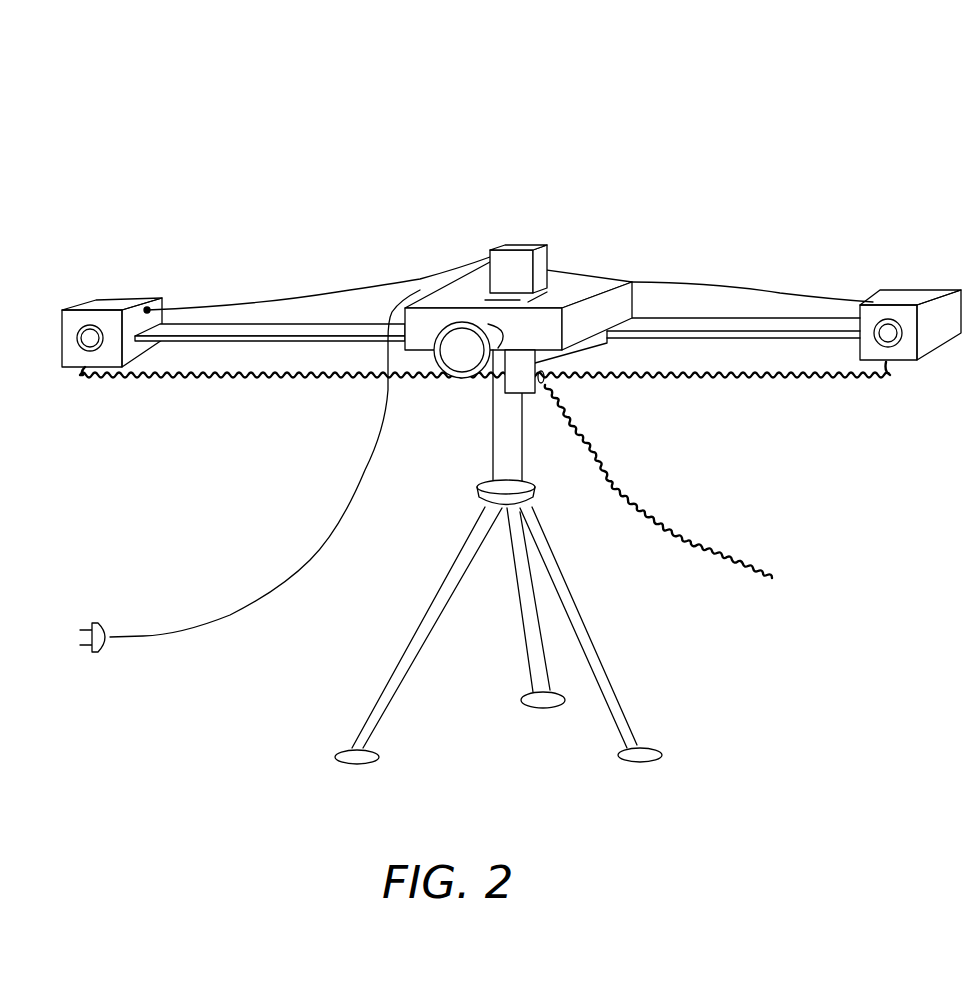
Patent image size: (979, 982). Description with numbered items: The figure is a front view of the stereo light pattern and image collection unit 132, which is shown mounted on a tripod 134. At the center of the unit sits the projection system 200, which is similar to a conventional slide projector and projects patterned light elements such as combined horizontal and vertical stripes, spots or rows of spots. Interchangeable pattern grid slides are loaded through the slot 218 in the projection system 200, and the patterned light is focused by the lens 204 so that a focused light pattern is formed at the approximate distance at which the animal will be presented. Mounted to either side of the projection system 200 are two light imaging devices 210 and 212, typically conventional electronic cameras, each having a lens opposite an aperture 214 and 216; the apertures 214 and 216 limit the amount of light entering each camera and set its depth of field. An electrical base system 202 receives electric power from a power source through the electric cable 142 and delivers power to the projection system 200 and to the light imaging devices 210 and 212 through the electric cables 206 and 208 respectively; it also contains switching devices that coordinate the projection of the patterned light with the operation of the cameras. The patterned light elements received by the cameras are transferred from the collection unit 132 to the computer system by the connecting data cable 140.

The stereo light pattern and image collection unit 132 is at (488, 166).
The tripod 134 is at (453, 570).
The data cable 140 is at (608, 382).
The electric cable 142 is at (343, 503).
The projection system 200 is at (612, 310).
The electrical base system 202 is at (537, 243).
The lens 204 is at (462, 362).
The electric cable 206 is at (337, 292).
The electric cable 208 is at (775, 271).
The light imaging device 210 is at (113, 300).
The light imaging device 212 is at (917, 295).
The aperture 214 is at (90, 338).
The aperture 216 is at (888, 333).
The slot 218 is at (540, 290).